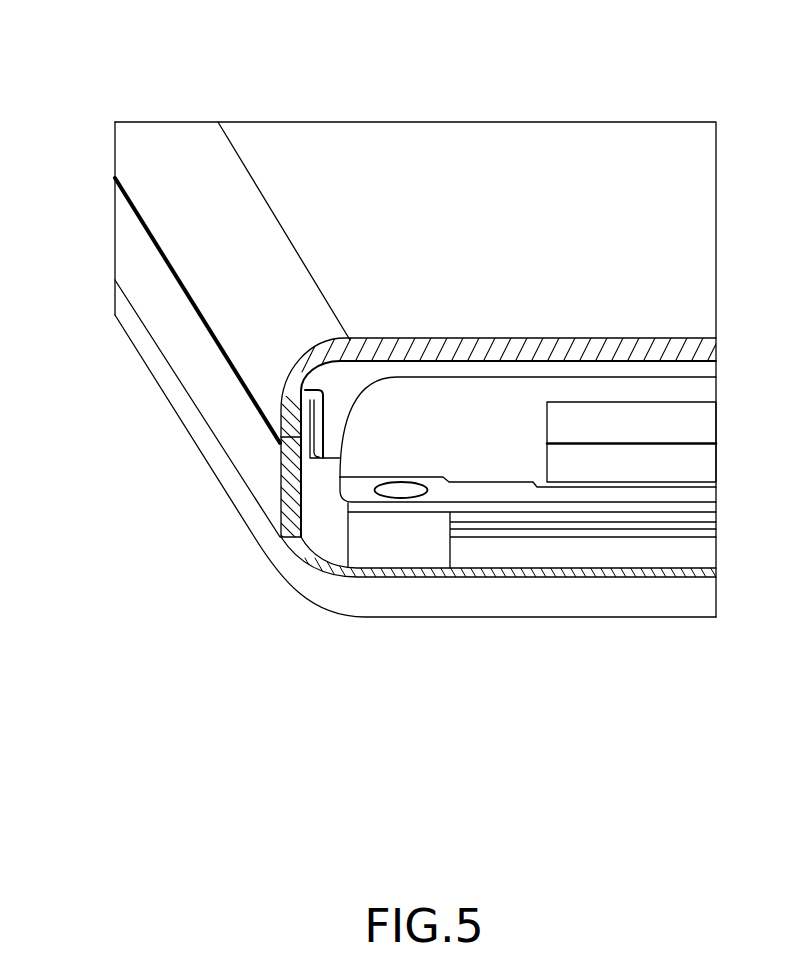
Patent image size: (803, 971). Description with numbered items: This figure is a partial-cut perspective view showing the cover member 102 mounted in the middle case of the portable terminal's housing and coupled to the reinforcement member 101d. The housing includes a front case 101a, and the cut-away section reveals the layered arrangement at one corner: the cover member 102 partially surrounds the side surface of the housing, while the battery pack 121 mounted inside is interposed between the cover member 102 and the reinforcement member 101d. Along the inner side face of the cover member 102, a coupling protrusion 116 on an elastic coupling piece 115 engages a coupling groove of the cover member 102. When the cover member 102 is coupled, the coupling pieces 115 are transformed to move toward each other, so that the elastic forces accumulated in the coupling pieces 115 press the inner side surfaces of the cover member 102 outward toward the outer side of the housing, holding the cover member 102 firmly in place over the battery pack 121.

The cover member 102 is at (476, 152).
The front case 101a is at (190, 357).
The coupling pieces 115 is at (283, 485).
The coupling protrusions 116 is at (307, 415).
The battery pack 121 is at (410, 448).
The reinforcement member 101d is at (486, 488).